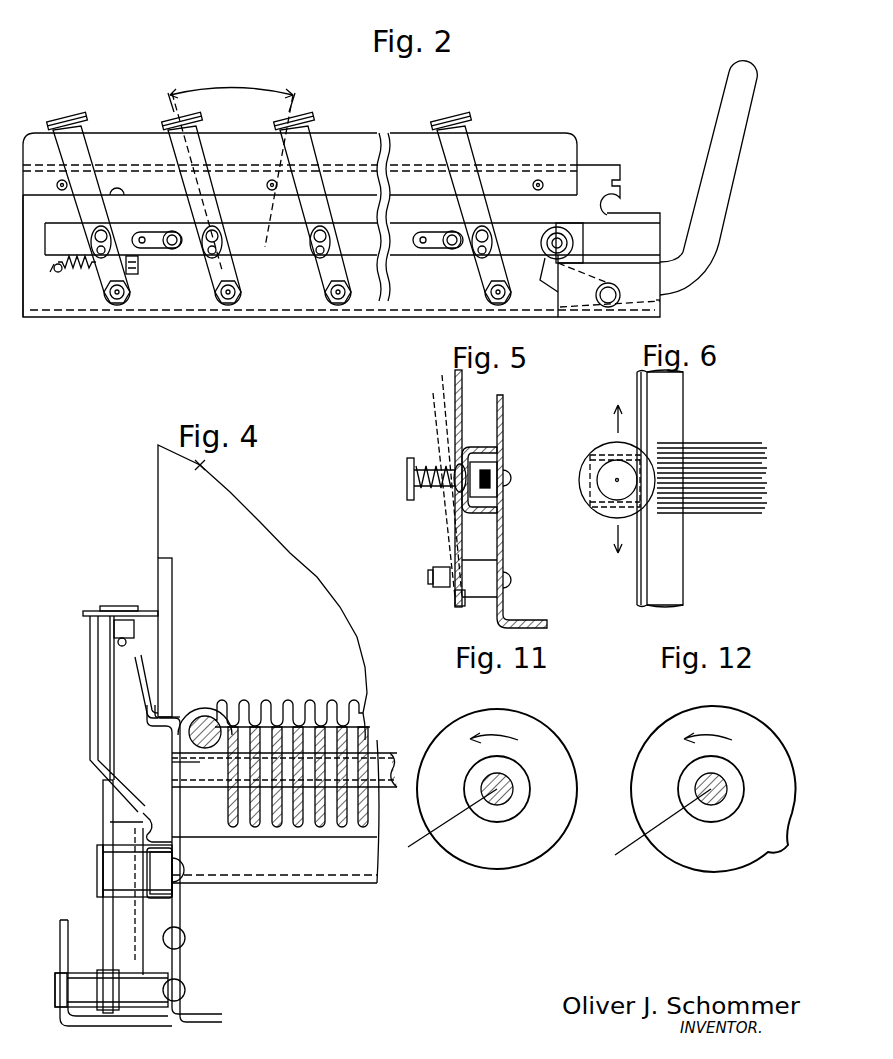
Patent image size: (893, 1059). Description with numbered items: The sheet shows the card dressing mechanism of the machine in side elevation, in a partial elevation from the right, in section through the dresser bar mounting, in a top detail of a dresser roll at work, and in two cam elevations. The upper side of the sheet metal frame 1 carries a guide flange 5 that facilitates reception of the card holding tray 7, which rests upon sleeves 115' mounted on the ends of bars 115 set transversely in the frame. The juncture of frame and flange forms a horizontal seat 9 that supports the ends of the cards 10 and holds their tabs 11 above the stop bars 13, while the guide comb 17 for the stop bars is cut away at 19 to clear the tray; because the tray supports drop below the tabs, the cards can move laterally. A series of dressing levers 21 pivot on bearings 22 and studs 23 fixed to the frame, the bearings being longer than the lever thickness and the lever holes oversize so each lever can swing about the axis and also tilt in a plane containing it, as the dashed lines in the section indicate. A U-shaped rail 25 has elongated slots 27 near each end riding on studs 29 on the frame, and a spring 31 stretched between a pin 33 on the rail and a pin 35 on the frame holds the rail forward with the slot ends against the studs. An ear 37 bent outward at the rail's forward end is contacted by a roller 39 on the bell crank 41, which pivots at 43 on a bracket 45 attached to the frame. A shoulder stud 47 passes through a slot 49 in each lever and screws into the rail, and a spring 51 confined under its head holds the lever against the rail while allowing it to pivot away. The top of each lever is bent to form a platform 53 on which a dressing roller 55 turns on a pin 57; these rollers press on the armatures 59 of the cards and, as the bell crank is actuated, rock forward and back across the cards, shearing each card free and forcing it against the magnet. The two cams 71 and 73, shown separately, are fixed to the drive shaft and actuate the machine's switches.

In FIG. 2, the sheet metal frame 1 is at (154, 317).
In FIG. 4, the sheet metal frame 1 is at (180, 910).
In FIG. 5, the sheet metal frame 1 is at (503, 540).
In FIG. 2, the guide flange 5 is at (335, 343).
In FIG. 4, the guide flange 5 is at (138, 680).
In FIG. 6, the guide flange 5 is at (637, 566).
In FIG. 4, the card holding tray 7 is at (210, 716).
In FIG. 2, the horizontal seat 9 is at (607, 170).
In FIG. 4, the horizontal seat 9 is at (192, 714).
In FIG. 6, the horizontal seat 9 is at (690, 557).
In FIG. 4, the cards 10 is at (205, 466).
In FIG. 6, the cards 10 is at (732, 505).
In FIG. 4, the tabs 11 is at (271, 712).
In FIG. 4, the stop bars 13 is at (255, 828).
In FIG. 4, the guide comb 17 is at (214, 829).
In FIG. 4, the cut away 19 is at (205, 770).
In FIG. 2, the dressing levers 21 is at (207, 147).
In FIG. 4, the dressing levers 21 is at (90, 730).
In FIG. 5, the dressing levers 21 is at (455, 377).
In FIG. 6, the dressing levers 21 is at (590, 469).
In FIG. 5, the bearings 22 is at (440, 588).
In FIG. 2, the studs 23 is at (242, 293).
In FIG. 5, the studs 23 is at (478, 598).
In FIG. 2, the U-shaped rail 25 is at (288, 258).
In FIG. 4, the U-shaped rail 25 is at (141, 887).
In FIG. 5, the U-shaped rail 25 is at (468, 508).
In FIG. 2, the elongated slots 27 is at (142, 237).
In FIG. 2, the studs 29 is at (176, 232).
In FIG. 4, the studs 29 is at (168, 858).
In FIG. 5, the studs 29 is at (485, 470).
In FIG. 2, the spring 31 is at (86, 274).
In FIG. 2, the pin 33 is at (134, 275).
In FIG. 2, the pin 35 is at (58, 275).
In FIG. 2, the ear 37 is at (583, 243).
In FIG. 4, the ear 37 is at (97, 872).
In FIG. 2, the roller 39 is at (556, 228).
In FIG. 2, the bell crank 41 is at (722, 192).
In FIG. 4, the bell crank 41 is at (103, 808).
In FIG. 2, the pivot 43 is at (605, 307).
In FIG. 4, the pivot 43 is at (55, 994).
In FIG. 2, the bracket 45 is at (655, 306).
In FIG. 4, the bracket 45 is at (60, 940).
In FIG. 2, the shoulder stud 47 is at (222, 243).
In FIG. 5, the shoulder stud 47 is at (407, 463).
In FIG. 2, the slot 49 is at (212, 232).
In FIG. 5, the slot 49 is at (448, 465).
In FIG. 5, the spring 51 is at (432, 462).
In FIG. 4, the platform 53 is at (126, 628).
In FIG. 6, the platform 53 is at (610, 447).
In FIG. 2, the dressing roller 55 is at (198, 120).
In FIG. 4, the dressing roller 55 is at (83, 613).
In FIG. 6, the dressing roller 55 is at (600, 505).
In FIG. 2, the pin 57 is at (172, 118).
In FIG. 4, the pin 57 is at (120, 606).
In FIG. 6, the pin 57 is at (600, 484).
In FIG. 4, the armatures 59 is at (172, 598).
In FIG. 11, the cam 71 is at (554, 758).
In FIG. 12, the cam 73 is at (778, 838).
In FIG. 4, the bars 115 is at (401, 758).
In FIG. 4, the sleeves 115' is at (154, 768).